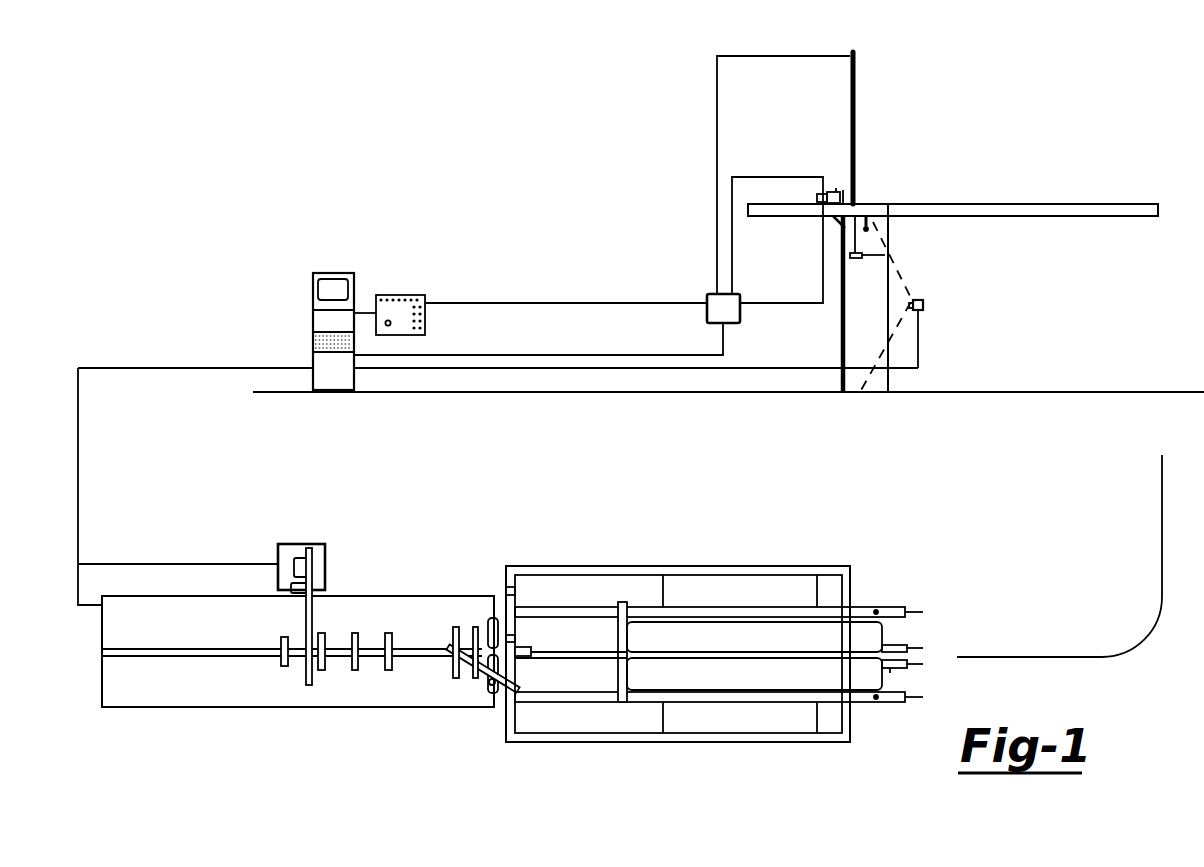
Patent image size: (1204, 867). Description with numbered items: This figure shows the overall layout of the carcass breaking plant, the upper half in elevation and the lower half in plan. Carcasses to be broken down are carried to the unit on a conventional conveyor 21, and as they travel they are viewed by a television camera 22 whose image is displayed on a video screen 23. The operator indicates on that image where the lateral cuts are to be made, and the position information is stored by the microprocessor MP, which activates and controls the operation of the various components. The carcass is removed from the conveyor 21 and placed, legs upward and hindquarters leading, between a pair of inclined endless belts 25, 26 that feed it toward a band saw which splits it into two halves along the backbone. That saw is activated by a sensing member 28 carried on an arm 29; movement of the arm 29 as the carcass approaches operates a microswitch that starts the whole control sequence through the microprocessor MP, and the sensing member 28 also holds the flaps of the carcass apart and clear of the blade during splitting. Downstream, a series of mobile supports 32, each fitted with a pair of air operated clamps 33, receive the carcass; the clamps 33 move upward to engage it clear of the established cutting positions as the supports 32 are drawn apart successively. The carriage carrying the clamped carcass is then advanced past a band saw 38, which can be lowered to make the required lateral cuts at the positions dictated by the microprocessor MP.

The conveyor 21 is at (1096, 204).
The television camera 22 is at (923, 304).
The video screen 23 is at (345, 273).
The inclined endless belt 25 is at (765, 684).
The inclined endless belt 26 is at (768, 646).
The sensing member 28 is at (531, 650).
The arm 29 is at (575, 649).
The mobile support 32 is at (324, 661).
The air operated clamp 33 is at (358, 660).
The band saw 38 is at (325, 556).
The microprocessor MP is at (296, 255).